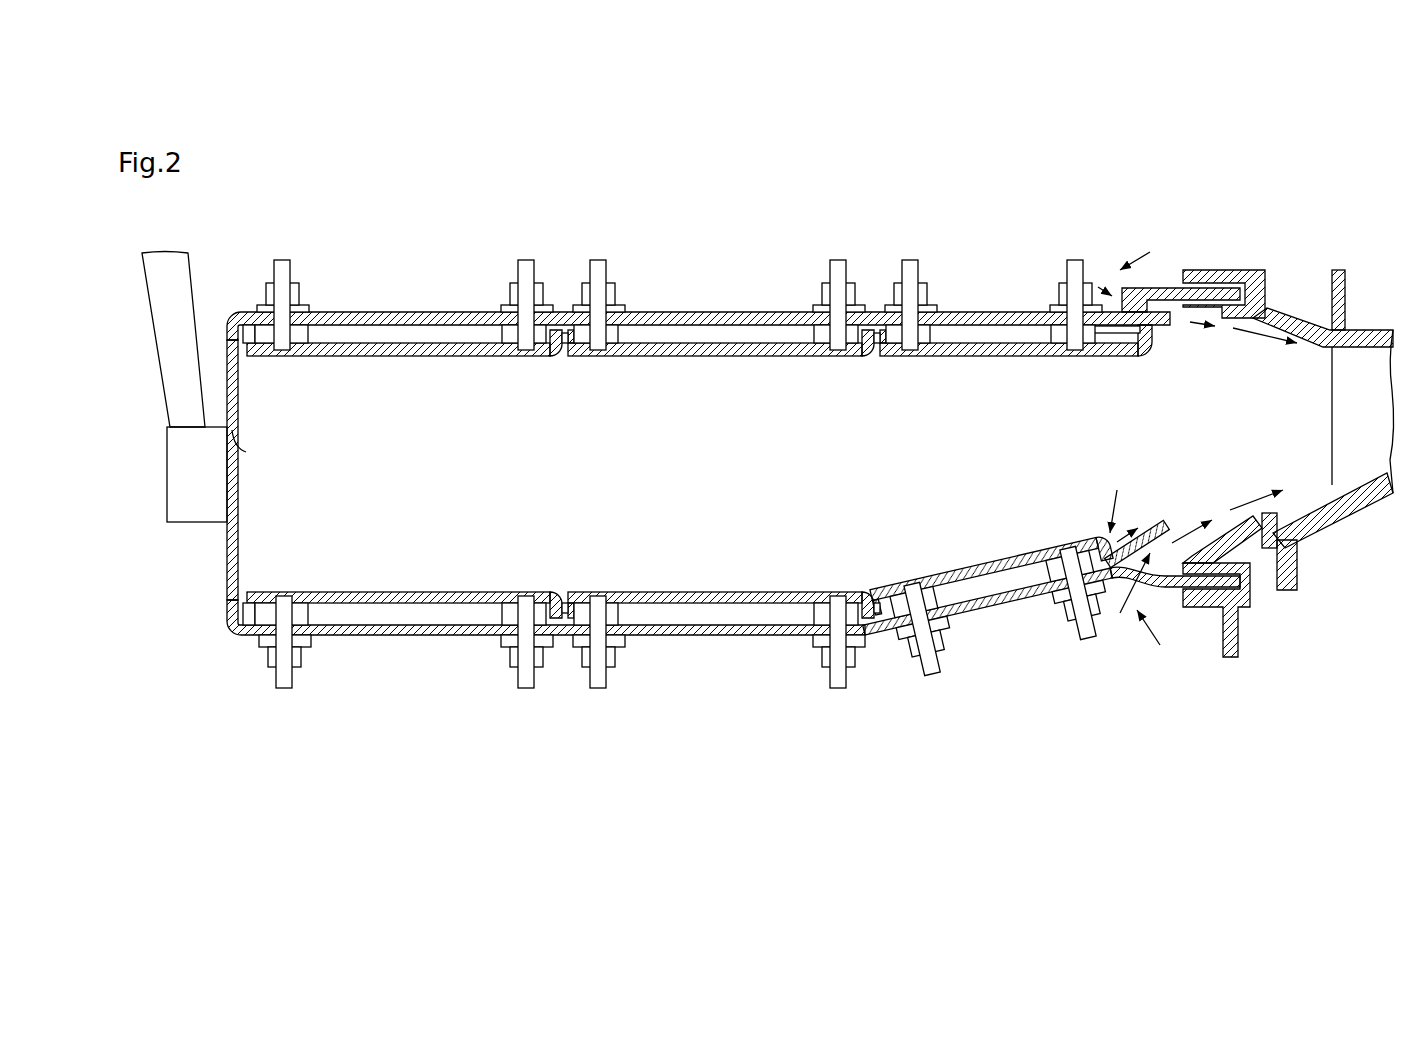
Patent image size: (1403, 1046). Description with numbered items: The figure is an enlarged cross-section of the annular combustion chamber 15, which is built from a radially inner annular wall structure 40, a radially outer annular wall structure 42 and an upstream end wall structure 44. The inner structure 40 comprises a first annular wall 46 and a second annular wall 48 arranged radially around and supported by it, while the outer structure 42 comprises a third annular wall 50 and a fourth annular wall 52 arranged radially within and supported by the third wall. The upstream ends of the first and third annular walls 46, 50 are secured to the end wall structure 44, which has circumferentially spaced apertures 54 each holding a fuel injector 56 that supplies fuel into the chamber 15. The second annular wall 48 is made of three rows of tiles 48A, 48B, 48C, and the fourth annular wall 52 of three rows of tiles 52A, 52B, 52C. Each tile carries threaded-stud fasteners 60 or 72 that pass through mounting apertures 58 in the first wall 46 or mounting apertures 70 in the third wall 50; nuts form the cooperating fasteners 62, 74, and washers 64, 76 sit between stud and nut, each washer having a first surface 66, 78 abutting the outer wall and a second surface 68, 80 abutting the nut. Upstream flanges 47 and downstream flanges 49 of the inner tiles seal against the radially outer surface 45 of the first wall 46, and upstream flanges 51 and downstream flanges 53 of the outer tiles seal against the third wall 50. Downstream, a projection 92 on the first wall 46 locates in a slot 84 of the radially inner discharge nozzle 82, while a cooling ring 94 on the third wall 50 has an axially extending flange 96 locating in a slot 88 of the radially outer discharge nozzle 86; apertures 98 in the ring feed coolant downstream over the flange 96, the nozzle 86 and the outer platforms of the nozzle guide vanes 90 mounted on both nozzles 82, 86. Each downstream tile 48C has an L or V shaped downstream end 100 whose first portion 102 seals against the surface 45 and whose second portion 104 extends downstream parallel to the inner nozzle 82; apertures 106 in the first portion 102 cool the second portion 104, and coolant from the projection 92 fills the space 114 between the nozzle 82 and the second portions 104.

The combustion chamber 15 is at (752, 262).
The radially inner annular wall structure 40 is at (1200, 584).
The radially outer annular wall structure 42 is at (1208, 287).
The upstream end wall structure 44 is at (228, 572).
The radially outer surface 45 is at (724, 638).
The first annular wall 46 is at (780, 638).
The flange 47 is at (246, 614).
The second annular wall 48 is at (674, 563).
The tiles 48A is at (358, 592).
The tiles 48B is at (693, 592).
The tiles 48C is at (1040, 554).
The flange 49 is at (557, 620).
The third annular wall 50 is at (796, 312).
The flange 51 is at (246, 334).
The fourth annular wall 52 is at (692, 371).
The tiles 52A is at (432, 358).
The tiles 52B is at (662, 357).
The tiles 52C is at (1000, 357).
The flange 53 is at (553, 347).
The aperture 54 is at (243, 440).
The fuel injector 56 is at (170, 458).
The mounting aperture 58 is at (300, 620).
The fastener 60 is at (284, 684).
The cooperating fastener 62 is at (268, 662).
The washer 64 is at (262, 641).
The first surface 66 is at (815, 625).
The second surface 68 is at (855, 642).
The mounting aperture 70 is at (290, 332).
The fastener 72 is at (280, 264).
The cooperating fastener 74 is at (300, 290).
The washer 76 is at (262, 307).
The first surface 78 is at (820, 326).
The second surface 80 is at (858, 312).
The radially inner discharge nozzle 82 is at (1272, 592).
The slot 84 is at (1243, 610).
The radially outer discharge nozzle 86 is at (1255, 278).
The slot 88 is at (1212, 283).
The nozzle guide vanes 90 is at (1352, 397).
The projection 92 is at (1172, 592).
The cooling ring 94 is at (1110, 285).
The axially extending flange 96 is at (1162, 293).
The apertures 98 is at (1127, 357).
The L or V shaped downstream end 100 is at (1112, 497).
The first portion 102 is at (1113, 585).
The second portion 104 is at (1153, 525).
The apertures 106 is at (1110, 547).
The space 114 is at (1168, 565).